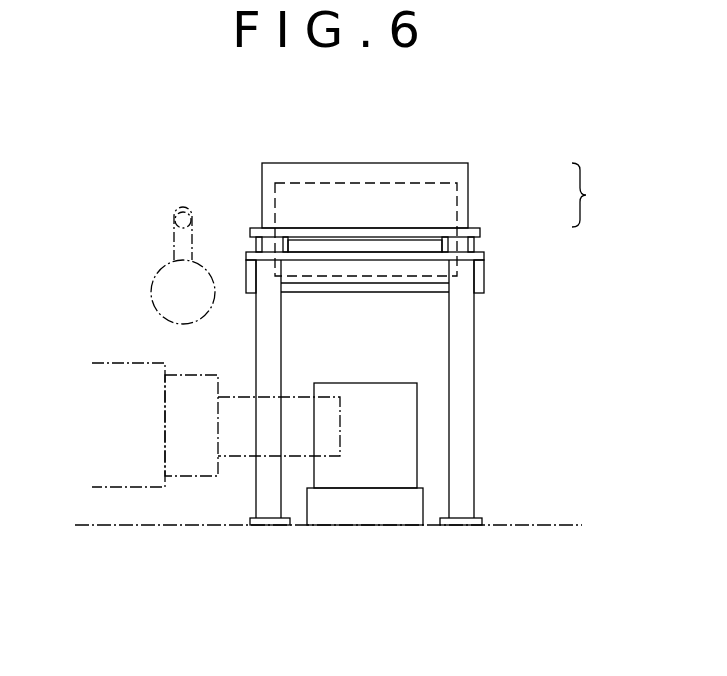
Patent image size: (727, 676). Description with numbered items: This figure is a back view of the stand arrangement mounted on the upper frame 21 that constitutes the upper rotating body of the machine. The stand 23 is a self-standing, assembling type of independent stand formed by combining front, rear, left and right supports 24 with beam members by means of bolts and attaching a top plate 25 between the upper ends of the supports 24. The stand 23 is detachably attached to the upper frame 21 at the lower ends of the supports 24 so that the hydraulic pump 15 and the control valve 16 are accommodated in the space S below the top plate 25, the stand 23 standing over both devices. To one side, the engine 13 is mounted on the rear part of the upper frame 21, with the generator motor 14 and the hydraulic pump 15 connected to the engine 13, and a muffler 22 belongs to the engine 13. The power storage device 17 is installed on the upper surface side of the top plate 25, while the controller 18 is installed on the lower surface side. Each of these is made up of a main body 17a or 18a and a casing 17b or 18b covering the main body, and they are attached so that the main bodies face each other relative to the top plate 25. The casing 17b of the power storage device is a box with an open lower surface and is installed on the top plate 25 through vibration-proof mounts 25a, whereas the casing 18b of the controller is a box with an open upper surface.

The engine 13 is at (145, 488).
The generator motor 14 is at (195, 478).
The hydraulic pump 15 is at (295, 458).
The control valve 16 is at (417, 433).
The power storage device 17 is at (595, 195).
The main body 17a is at (475, 192).
The casing 17b is at (468, 217).
The controller 18 is at (417, 340).
The main body 18a is at (333, 285).
The casing 18b is at (377, 285).
The upper frame 21 is at (533, 522).
The muffler 22 is at (157, 277).
The stand 23 is at (480, 342).
The support 24 is at (256, 350).
The top plate 25 is at (260, 230).
The vibration-proof mount 25a is at (288, 252).
The space S is at (450, 310).